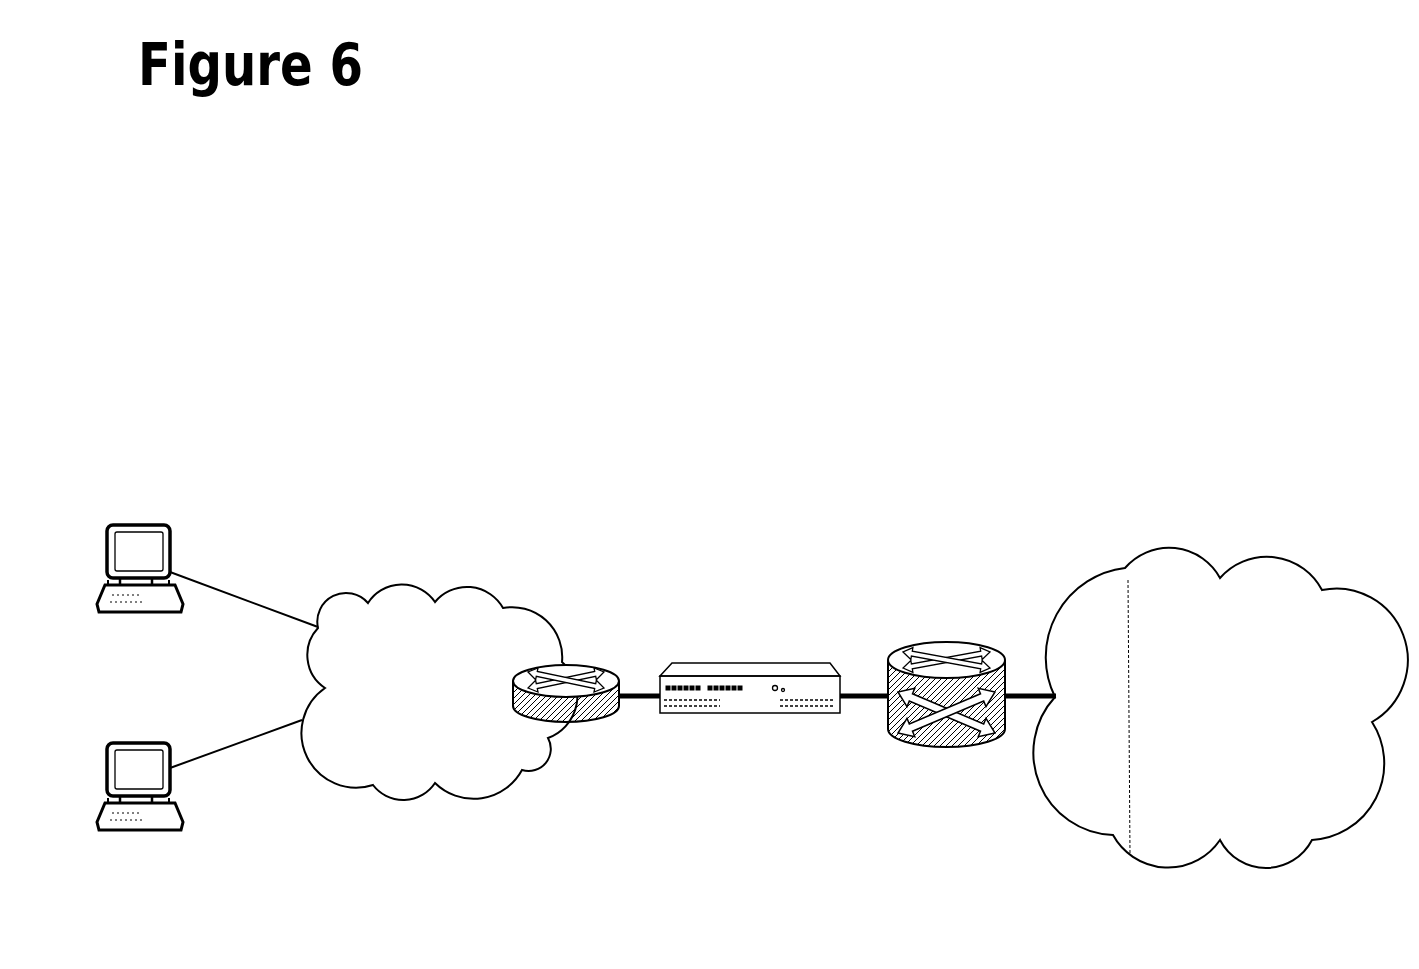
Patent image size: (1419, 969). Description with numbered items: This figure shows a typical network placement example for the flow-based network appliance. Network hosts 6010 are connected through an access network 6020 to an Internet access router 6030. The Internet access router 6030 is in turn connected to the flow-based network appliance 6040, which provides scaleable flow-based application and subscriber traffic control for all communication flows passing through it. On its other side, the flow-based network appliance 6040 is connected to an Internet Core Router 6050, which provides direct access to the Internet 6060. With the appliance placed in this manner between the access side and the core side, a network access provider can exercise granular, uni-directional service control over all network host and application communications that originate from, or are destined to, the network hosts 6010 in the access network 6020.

The network hosts 6010 is at (172, 643).
The access network 6020 is at (439, 720).
The Internet access router 6030 is at (572, 623).
The flow-based network appliance 6040 is at (746, 690).
The Internet Core Router 6050 is at (929, 636).
The Internet 6060 is at (1220, 719).